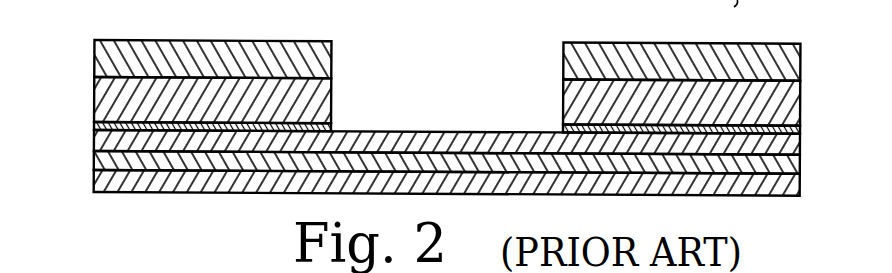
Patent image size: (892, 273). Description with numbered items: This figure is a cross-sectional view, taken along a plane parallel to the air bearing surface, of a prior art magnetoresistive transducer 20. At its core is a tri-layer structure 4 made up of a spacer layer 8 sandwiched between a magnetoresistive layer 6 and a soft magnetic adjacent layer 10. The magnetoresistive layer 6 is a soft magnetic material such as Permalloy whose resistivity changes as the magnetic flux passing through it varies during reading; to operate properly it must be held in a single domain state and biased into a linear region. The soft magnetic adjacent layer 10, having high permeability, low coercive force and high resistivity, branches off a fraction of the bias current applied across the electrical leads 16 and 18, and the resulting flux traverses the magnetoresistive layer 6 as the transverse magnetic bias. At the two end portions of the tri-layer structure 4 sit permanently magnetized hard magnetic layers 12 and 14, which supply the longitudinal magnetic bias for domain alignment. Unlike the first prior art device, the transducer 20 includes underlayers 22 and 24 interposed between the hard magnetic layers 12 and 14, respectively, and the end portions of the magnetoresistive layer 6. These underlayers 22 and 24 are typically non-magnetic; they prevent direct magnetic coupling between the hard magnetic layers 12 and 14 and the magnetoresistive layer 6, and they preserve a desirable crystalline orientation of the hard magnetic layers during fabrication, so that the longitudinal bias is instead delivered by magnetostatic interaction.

The tri-layer structure 4 is at (419, 170).
The magnetoresistive layer 6 is at (458, 145).
The spacer layer 8 is at (377, 147).
The soft magnetic adjacent layer 10 is at (215, 183).
The hard magnetic layer 12 is at (115, 107).
The hard magnetic layer 14 is at (800, 108).
The electrical lead 16 is at (165, 42).
The electrical lead 18 is at (563, 65).
The magnetic transducer 20 is at (690, 73).
The underlayer 22 is at (97, 128).
The underlayer 24 is at (800, 133).